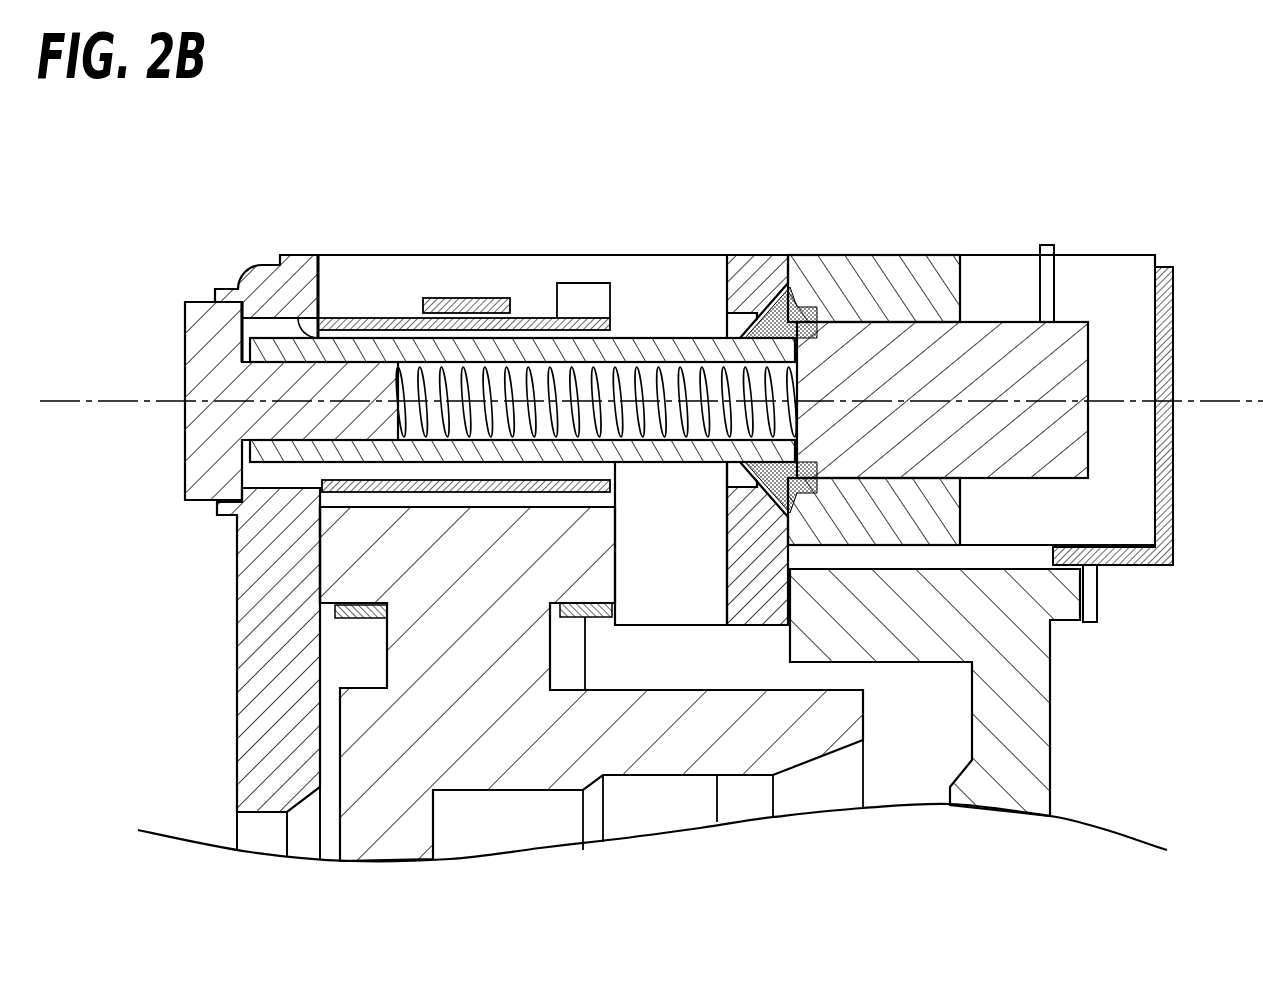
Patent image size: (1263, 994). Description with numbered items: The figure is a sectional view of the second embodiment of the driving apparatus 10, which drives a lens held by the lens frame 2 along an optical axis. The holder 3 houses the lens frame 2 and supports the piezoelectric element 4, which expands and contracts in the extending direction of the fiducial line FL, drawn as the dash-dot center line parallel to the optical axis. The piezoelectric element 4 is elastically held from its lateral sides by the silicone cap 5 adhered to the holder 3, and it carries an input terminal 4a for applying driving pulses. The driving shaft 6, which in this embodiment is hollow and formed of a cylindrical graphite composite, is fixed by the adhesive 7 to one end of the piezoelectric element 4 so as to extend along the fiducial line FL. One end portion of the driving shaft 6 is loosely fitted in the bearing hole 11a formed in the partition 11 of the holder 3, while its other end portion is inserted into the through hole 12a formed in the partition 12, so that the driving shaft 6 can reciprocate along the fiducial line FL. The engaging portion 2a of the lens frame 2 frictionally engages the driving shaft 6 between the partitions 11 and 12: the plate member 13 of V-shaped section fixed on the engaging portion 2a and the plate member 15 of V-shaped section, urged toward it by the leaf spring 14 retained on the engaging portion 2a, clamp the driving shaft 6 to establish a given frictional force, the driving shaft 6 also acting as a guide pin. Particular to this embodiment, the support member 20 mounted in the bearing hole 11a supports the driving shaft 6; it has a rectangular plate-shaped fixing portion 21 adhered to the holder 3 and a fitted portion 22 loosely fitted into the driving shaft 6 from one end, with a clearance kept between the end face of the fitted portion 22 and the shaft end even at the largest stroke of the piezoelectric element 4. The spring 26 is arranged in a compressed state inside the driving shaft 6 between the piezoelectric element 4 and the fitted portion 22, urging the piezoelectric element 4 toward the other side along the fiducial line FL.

The lens frame 2 is at (387, 850).
The engaging portion 2a is at (330, 572).
The holder 3 is at (237, 758).
The piezoelectric element 4 is at (987, 323).
The input terminal 4a is at (1055, 287).
The silicone cap 5 is at (878, 262).
The driving shaft 6 is at (653, 337).
The adhesive 7 is at (812, 305).
The driving apparatus 10 is at (1195, 212).
The partition 11 is at (296, 262).
The bearing hole 11a is at (342, 333).
The partition 12 is at (770, 262).
The through hole 12a is at (740, 317).
The plate member 13 is at (612, 487).
The leaf spring 14 is at (455, 298).
The plate member 15 is at (542, 335).
The support member 20 is at (133, 295).
The fixing portion 21 is at (185, 466).
The fitted portion 22 is at (308, 425).
The spring 26 is at (688, 440).
The fiducial line FL is at (58, 398).